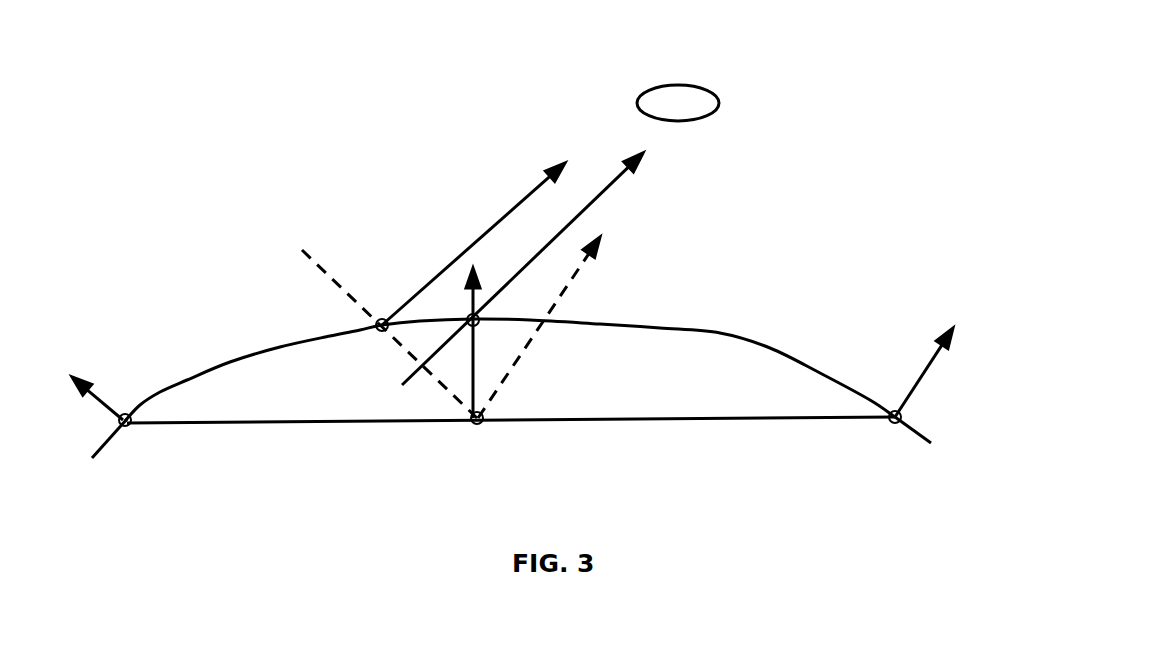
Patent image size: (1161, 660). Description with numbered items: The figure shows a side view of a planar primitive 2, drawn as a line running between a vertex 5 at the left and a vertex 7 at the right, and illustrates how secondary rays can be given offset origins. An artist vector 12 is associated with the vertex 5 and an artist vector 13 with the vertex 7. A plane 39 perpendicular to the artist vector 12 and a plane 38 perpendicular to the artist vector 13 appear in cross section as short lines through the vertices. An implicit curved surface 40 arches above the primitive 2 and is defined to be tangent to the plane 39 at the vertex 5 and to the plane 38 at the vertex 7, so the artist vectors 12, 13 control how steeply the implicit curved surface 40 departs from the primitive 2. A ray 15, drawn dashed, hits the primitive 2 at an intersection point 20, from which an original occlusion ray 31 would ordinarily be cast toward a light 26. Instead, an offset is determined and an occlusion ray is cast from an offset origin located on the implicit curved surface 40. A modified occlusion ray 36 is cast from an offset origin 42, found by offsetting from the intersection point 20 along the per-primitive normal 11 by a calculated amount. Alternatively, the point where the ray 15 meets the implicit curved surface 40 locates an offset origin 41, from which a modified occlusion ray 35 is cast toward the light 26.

The primitive 2 is at (511, 445).
The vertex 5 is at (136, 386).
The vertex 7 is at (877, 385).
The per-primitive normal 11 is at (368, 343).
The artist vector 12 is at (139, 312).
The artist vector 13 is at (855, 297).
The ray 15 is at (389, 318).
The intersection point 20 is at (559, 446).
The light 26 is at (734, 84).
The original occlusion ray 31 is at (627, 327).
The modified occlusion ray 35 is at (425, 226).
The modified occlusion ray 36 is at (518, 223).
The plane perpendicular to artist vector 38 is at (827, 475).
The plane perpendicular to artist vector 39 is at (171, 494).
The implicit curved surface 40 is at (510, 370).
The offset origin 41 is at (276, 309).
The offset origin 42 is at (389, 423).